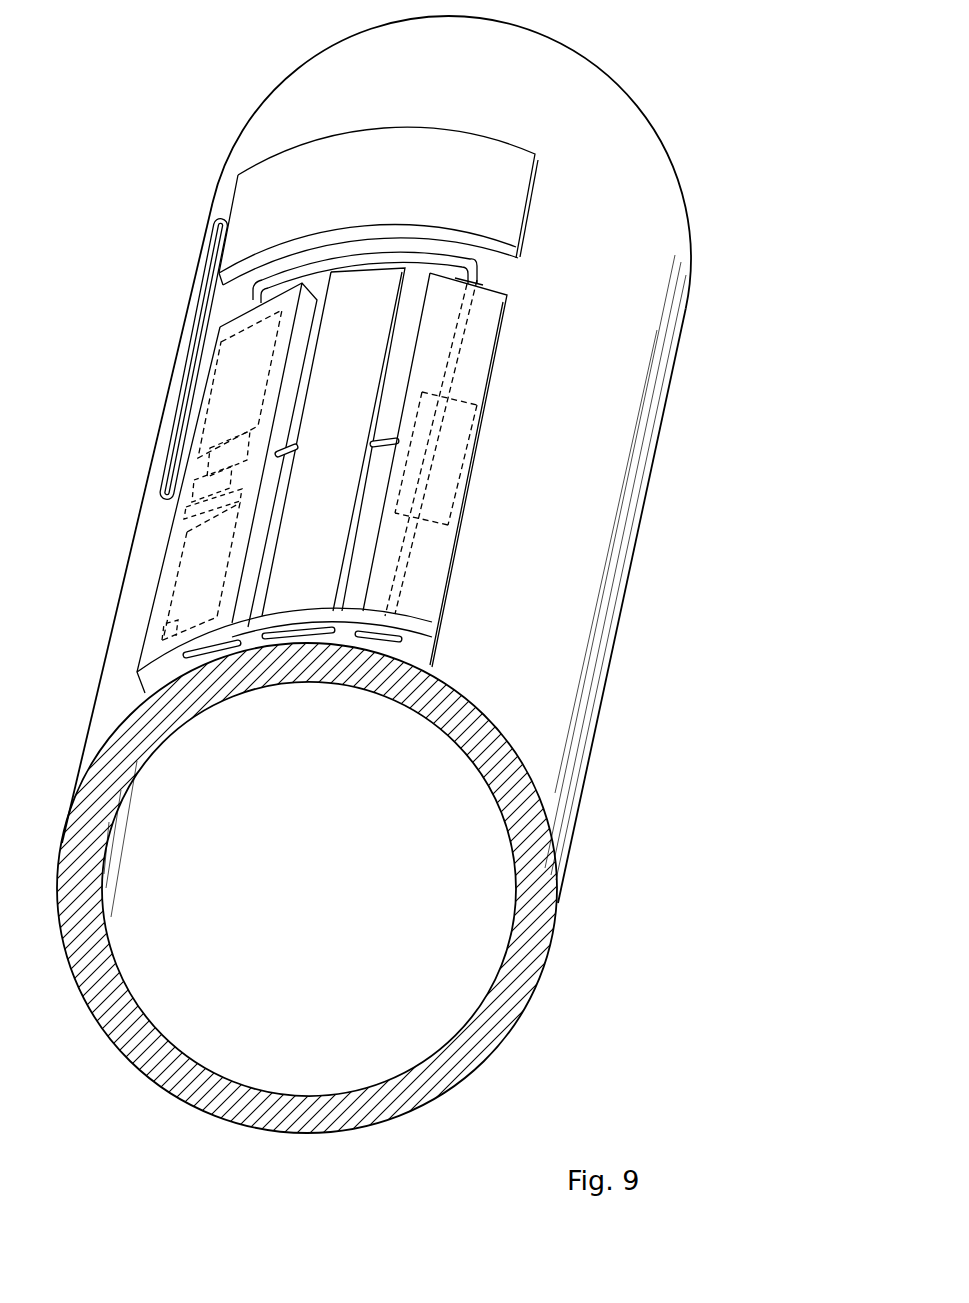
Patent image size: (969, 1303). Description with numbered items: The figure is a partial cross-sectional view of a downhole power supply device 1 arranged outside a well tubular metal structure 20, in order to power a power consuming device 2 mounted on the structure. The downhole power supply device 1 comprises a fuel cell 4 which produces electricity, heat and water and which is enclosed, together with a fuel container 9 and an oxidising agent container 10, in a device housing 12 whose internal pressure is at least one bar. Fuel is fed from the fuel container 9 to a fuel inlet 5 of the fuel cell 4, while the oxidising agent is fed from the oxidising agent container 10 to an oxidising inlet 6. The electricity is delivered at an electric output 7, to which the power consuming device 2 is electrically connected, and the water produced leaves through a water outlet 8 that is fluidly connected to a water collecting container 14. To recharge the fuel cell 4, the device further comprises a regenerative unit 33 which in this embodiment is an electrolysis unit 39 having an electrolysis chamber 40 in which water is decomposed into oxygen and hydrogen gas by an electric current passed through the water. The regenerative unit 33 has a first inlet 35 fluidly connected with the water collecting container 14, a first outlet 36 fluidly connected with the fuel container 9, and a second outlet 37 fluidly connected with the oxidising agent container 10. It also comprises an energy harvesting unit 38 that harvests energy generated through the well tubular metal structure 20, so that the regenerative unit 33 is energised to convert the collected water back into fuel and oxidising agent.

The downhole power supply device 1 is at (152, 110).
The power consuming device 2 is at (377, 199).
The fuel cell 4 is at (190, 486).
The fuel inlet 5 is at (210, 452).
The oxidising inlet 6 is at (198, 509).
The electric output 7 is at (166, 506).
The water outlet 8 is at (287, 447).
The fuel container 9 is at (235, 372).
The oxidising agent container 10 is at (190, 604).
The device housing 12 is at (222, 332).
The water collecting container 14 is at (347, 459).
The well tubular metal structure 20 is at (640, 195).
The regenerative unit 33 is at (485, 347).
The first inlet 35 is at (437, 475).
The first outlet 36 is at (455, 380).
The second outlet 37 is at (412, 598).
The energy harvesting unit 38 is at (462, 425).
The electrolysis unit 39 is at (407, 592).
The electrolysis chamber 40 is at (420, 498).